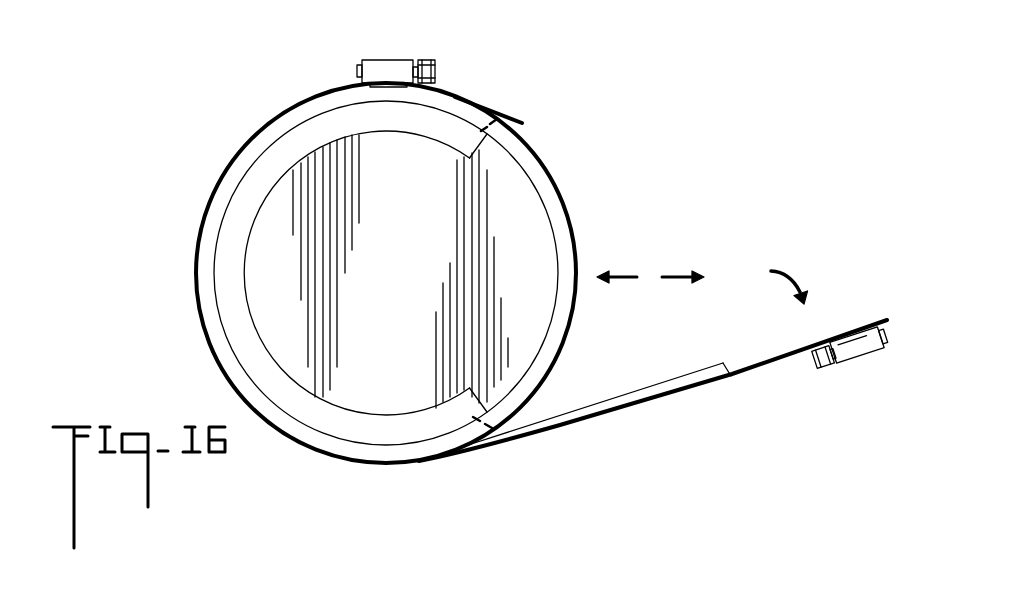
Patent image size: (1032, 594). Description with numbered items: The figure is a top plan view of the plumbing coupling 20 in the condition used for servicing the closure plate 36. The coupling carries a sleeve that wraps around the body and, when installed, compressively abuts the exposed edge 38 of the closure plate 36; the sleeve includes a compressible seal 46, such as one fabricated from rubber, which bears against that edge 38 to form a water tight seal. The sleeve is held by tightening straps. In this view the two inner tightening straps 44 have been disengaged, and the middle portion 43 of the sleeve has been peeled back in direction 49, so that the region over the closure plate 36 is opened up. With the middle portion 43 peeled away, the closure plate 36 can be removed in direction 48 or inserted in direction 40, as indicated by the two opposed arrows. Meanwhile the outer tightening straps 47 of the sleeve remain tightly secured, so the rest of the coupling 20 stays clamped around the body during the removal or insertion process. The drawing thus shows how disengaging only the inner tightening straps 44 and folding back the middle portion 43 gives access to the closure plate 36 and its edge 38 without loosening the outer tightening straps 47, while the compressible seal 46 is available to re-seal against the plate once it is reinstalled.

The plumbing coupling 20 is at (257, 83).
The closure plate 36 is at (393, 363).
The edge of closure plate 38 is at (230, 203).
The direction 40 is at (618, 280).
The middle portion 43 is at (732, 372).
The inner tightening straps 44 is at (587, 422).
The compressible seal 46 is at (618, 403).
The outer tightening straps 47 is at (499, 112).
The direction 48 is at (677, 276).
The direction 49 is at (807, 282).